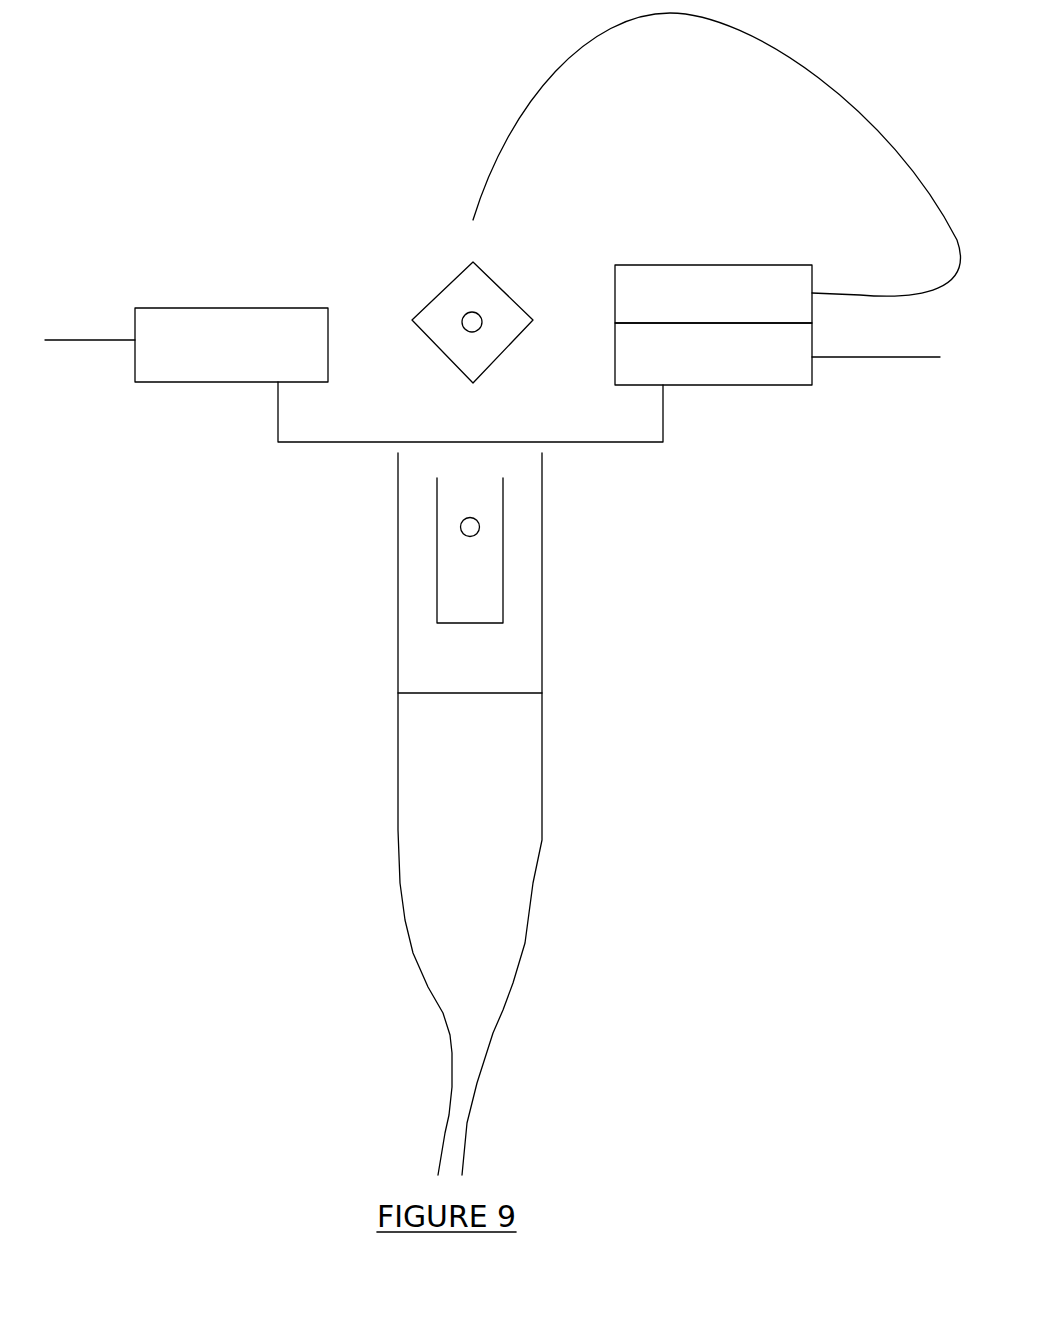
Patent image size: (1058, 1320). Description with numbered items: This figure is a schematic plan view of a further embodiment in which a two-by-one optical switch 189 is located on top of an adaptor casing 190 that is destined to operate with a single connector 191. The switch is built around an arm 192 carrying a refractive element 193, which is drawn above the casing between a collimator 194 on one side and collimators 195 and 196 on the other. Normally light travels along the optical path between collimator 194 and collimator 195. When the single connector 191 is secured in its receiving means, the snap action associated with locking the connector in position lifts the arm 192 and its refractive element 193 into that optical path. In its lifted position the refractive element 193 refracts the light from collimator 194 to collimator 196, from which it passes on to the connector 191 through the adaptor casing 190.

The 2 X1 optical switch 189 is at (363, 275).
The adaptor casing 190 is at (478, 478).
The single connector 191 is at (386, 814).
The arm 192 is at (413, 402).
The refractive element 193 is at (716, 154).
The collimator 194 is at (186, 400).
The collimator 195 is at (777, 406).
The collimator 196 is at (713, 243).